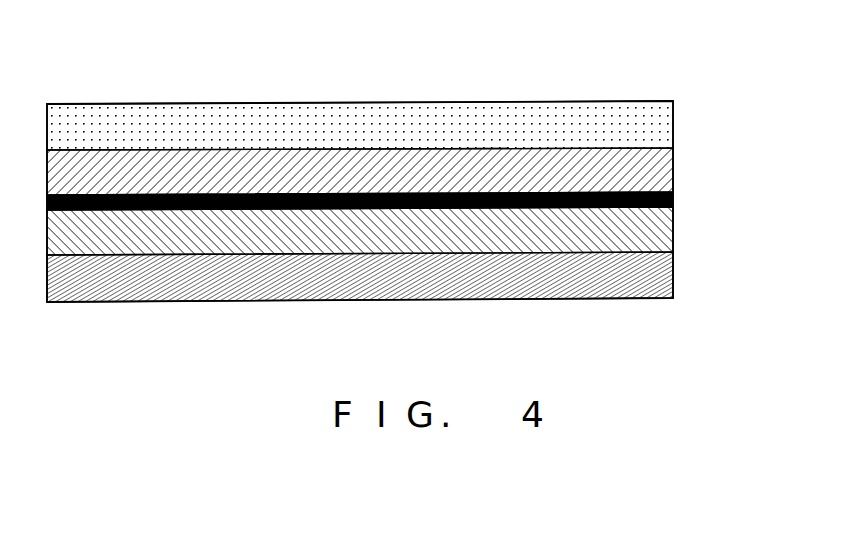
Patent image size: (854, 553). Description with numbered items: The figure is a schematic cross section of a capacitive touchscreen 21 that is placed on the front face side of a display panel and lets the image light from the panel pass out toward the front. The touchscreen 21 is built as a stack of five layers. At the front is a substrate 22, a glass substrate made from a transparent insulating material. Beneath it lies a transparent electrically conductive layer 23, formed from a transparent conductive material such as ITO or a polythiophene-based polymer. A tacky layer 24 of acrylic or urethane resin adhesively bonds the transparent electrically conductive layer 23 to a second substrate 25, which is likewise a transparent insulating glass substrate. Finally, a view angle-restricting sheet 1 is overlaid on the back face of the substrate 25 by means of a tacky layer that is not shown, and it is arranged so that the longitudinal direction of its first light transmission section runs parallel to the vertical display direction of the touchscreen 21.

The touchscreen 21 is at (681, 76).
The substrate 22 is at (657, 127).
The transparent electrically conductive layer 23 is at (660, 170).
The tacky layer 24 is at (675, 198).
The substrate 25 is at (657, 233).
The view angle-restricting sheet 1 is at (655, 277).